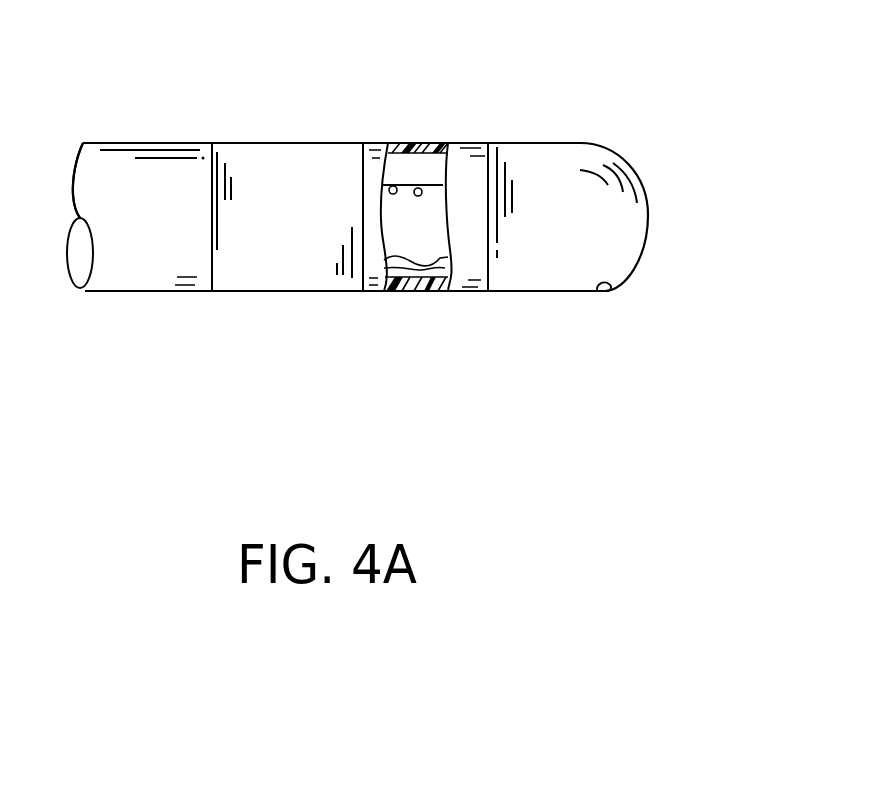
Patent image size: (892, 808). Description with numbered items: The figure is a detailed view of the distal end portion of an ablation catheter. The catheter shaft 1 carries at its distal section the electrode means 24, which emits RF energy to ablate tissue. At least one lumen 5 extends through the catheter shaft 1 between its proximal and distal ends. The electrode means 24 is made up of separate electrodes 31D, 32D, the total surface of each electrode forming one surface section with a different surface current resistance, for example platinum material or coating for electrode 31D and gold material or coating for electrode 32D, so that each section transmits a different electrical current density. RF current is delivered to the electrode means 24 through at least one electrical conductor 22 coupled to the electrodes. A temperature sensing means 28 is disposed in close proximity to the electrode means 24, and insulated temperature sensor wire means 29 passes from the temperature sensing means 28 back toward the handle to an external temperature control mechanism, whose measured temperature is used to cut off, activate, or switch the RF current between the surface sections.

The catheter shaft 1 is at (110, 135).
The electrode means 24 is at (517, 137).
The electrical conductor 22 is at (413, 180).
The lumen 5 is at (428, 215).
The insulated temperature sensor wire means 29 is at (413, 268).
The electrode 31D is at (640, 157).
The temperature sensing means 28 is at (614, 292).
The electrode 32D is at (273, 293).